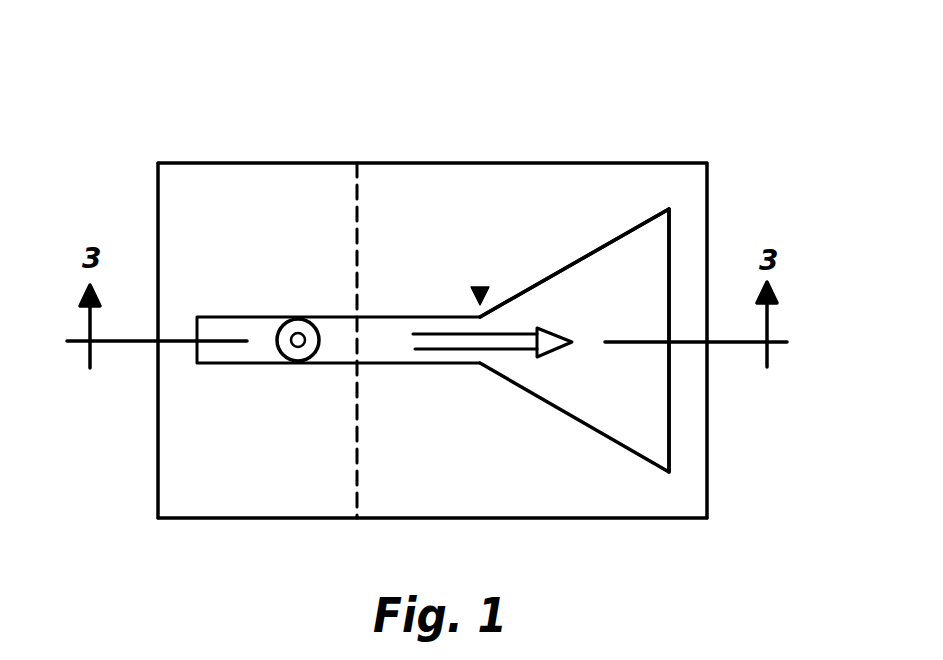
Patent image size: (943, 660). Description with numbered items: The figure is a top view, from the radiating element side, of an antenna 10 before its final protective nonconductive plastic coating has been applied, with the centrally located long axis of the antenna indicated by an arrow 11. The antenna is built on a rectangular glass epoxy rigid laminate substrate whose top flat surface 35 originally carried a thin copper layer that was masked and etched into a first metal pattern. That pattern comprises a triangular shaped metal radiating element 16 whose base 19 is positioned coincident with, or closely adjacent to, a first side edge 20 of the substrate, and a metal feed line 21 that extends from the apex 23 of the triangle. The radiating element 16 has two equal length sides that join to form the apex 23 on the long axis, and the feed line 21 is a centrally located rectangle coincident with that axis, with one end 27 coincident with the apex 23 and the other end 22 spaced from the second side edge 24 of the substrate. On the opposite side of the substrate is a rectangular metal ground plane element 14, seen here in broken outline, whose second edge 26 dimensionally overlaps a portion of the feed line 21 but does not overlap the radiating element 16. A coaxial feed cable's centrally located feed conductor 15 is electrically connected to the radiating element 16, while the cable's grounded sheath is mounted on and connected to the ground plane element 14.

The antenna 10 is at (758, 100).
The arrow indicating long axis 11 is at (517, 335).
The ground plane element 14 is at (185, 458).
The feed conductor 15 is at (298, 345).
The radiating element 16 is at (650, 422).
The base of radiating element 19 is at (670, 373).
The first side edge 20 is at (708, 240).
The feed line 21 is at (265, 317).
The other end of feed line 22 is at (197, 352).
The apex 23 is at (480, 287).
The second side edge 24 is at (158, 199).
The second edge of ground plane element 26 is at (357, 460).
The one end of feed line 27 is at (430, 323).
The top flat surface 35 is at (587, 178).